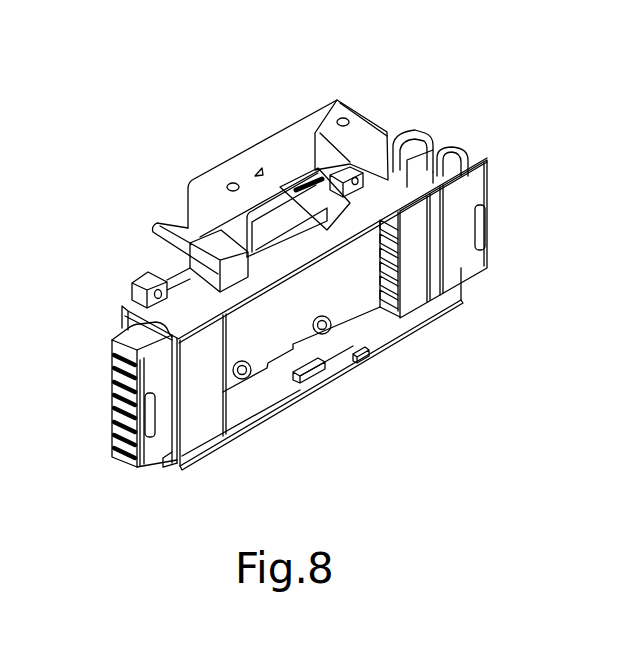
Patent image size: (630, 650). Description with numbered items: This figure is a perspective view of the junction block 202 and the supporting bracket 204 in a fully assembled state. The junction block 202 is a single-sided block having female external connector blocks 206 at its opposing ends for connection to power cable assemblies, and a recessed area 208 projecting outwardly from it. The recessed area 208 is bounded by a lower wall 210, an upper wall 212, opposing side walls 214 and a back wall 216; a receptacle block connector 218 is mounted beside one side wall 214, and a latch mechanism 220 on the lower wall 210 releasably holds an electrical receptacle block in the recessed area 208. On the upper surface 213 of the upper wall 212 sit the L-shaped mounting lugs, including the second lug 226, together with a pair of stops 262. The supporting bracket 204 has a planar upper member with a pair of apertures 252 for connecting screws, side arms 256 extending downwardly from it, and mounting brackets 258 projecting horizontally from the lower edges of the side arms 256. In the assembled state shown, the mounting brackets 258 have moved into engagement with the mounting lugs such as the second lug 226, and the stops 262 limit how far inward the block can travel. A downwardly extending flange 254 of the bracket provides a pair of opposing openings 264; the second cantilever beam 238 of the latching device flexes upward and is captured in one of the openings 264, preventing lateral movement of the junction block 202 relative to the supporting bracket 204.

The junction block 202 is at (499, 238).
The supporting bracket 204 is at (292, 106).
The female external connector blocks 206 is at (106, 409).
The recessed area 208 is at (358, 330).
The lower wall 210 is at (253, 408).
The upper wall 212 is at (190, 292).
The upper surface 213 is at (287, 215).
The side wall 214 is at (433, 220).
The back wall 216 is at (282, 346).
The receptacle block connector 218 is at (400, 268).
The latch mechanism 220 is at (317, 389).
The second lug 226 is at (423, 127).
The second cantilever beam 238 is at (368, 135).
The apertures 252 is at (350, 147).
The downwardly extending flange 254 is at (297, 163).
The side arms 256 is at (203, 187).
The mounting brackets 258 is at (170, 230).
The stops 262 is at (277, 291).
The openings 264 is at (257, 171).